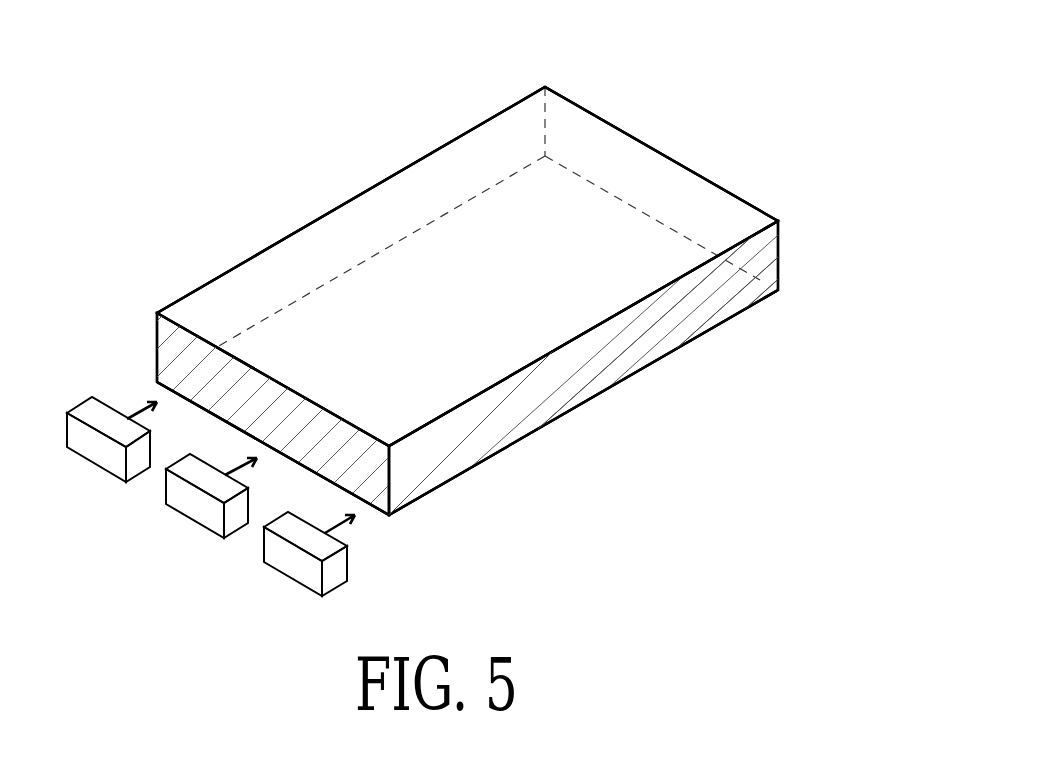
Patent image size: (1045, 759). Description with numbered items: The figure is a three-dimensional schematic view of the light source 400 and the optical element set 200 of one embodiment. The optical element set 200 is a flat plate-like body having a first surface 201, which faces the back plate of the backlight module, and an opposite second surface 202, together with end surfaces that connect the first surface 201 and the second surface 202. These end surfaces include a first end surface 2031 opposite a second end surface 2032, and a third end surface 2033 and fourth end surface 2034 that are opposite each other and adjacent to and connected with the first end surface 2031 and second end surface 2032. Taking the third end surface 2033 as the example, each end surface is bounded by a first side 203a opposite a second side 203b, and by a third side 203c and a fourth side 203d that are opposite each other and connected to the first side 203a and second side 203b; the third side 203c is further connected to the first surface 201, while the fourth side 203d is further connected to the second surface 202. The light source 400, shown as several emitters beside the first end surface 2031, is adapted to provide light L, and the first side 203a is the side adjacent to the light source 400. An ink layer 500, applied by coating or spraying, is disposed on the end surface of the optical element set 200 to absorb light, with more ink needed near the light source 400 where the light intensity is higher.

The optical element set 200 is at (510, 145).
The second surface 202 is at (463, 168).
The first surface 201 is at (555, 425).
The first end surface 2031 is at (200, 370).
The second end surface 2032 is at (653, 185).
The third end surface 2033 is at (480, 437).
The fourth end surface 2034 is at (387, 207).
The first side 203a is at (393, 480).
The second side 203b is at (763, 290).
The third side 203c is at (687, 338).
The fourth side 203d is at (748, 240).
The ink layer 500 is at (597, 375).
The light source 400 is at (102, 453).
The light L is at (338, 533).